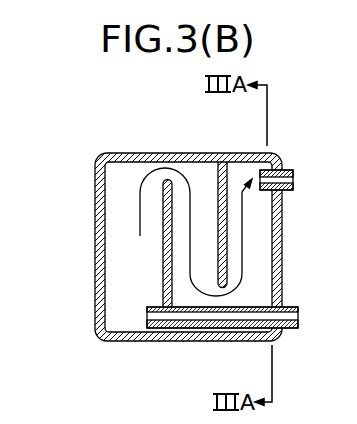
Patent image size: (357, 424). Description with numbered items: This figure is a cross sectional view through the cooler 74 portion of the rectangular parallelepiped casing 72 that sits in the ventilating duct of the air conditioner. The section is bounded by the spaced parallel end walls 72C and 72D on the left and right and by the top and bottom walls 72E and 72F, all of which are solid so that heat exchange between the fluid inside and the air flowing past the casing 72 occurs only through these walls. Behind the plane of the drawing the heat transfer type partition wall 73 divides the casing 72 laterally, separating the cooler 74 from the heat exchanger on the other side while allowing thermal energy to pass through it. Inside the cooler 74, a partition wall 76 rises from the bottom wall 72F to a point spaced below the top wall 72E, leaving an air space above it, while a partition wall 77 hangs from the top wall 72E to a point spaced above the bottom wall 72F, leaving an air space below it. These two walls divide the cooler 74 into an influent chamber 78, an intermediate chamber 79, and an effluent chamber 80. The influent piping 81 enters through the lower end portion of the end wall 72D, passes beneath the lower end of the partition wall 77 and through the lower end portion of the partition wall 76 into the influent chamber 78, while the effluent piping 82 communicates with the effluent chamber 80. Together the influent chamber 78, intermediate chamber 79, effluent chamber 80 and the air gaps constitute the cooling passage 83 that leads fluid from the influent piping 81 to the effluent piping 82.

The casing 72 is at (194, 236).
The end wall 72C is at (100, 236).
The end wall 72D is at (277, 202).
The top wall 72E is at (155, 153).
The bottom wall 72F is at (180, 341).
The partition wall 73 is at (123, 308).
The cooler 74 is at (123, 166).
The partition wall 76 is at (163, 212).
The partition wall 77 is at (244, 232).
The influent chamber 78 is at (117, 258).
The intermediate chamber 79 is at (163, 281).
The effluent chamber 80 is at (262, 277).
The influent piping 81 is at (255, 341).
The effluent piping 82 is at (283, 170).
The cooling passage 83 is at (193, 200).